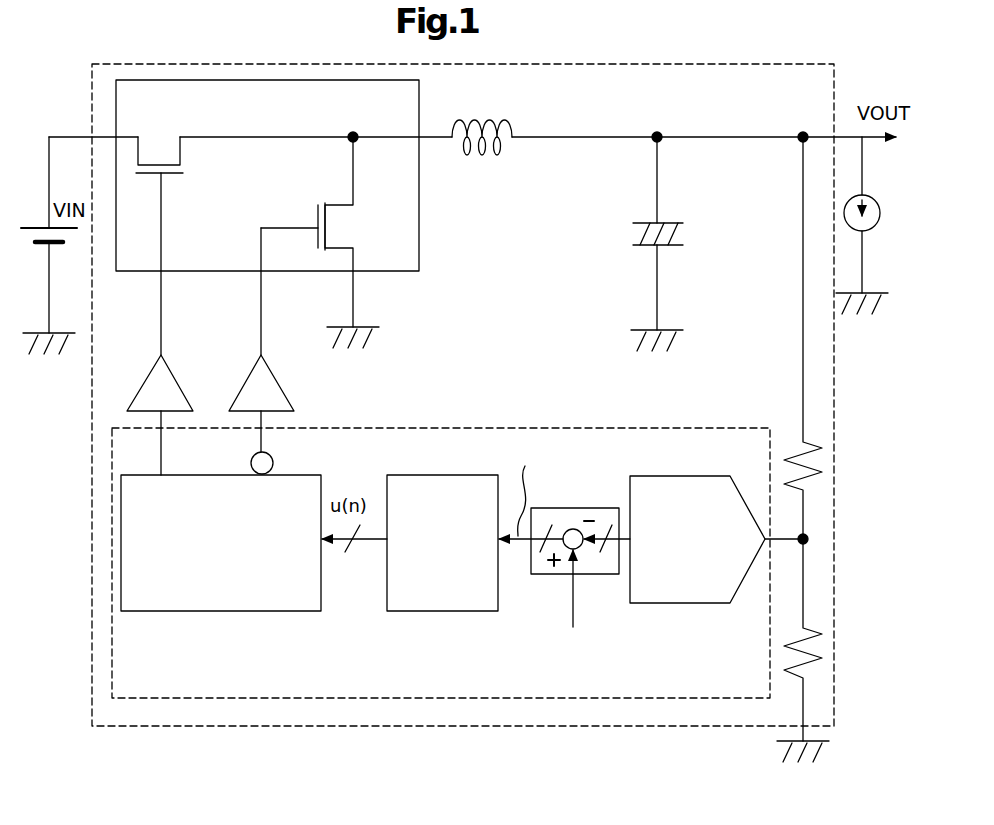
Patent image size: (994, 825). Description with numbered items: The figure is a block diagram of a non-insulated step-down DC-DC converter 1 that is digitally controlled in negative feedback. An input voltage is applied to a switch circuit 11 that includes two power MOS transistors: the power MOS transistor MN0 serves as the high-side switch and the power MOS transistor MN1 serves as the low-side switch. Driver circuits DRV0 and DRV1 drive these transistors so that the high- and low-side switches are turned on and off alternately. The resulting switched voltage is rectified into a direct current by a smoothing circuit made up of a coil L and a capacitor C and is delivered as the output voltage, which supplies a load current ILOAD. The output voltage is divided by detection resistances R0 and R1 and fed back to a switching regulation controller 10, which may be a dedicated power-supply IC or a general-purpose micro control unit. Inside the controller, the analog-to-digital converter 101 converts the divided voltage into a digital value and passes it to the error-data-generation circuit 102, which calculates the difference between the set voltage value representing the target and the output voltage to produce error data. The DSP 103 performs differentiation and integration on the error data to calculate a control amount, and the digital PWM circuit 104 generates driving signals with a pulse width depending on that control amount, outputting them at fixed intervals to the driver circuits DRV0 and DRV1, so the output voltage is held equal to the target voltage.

The DC-DC converter 1 is at (137, 726).
The switching regulation controller 10 is at (240, 698).
The switch circuit 11 is at (420, 258).
The analog-to-digital converter 101 is at (677, 603).
The error-data-generation circuit 102 is at (589, 508).
The DSP 103 is at (443, 611).
The digital PWM circuit 104 is at (218, 611).
The power MOS transistor MN0 is at (157, 147).
The power MOS transistor MN1 is at (337, 230).
The coil L is at (486, 156).
The capacitor C is at (631, 234).
The detection resistance R0 is at (825, 470).
The detection resistance R1 is at (825, 650).
The driver circuit DRV0 is at (143, 383).
The driver circuit DRV1 is at (245, 383).
The load current source ILOAD is at (879, 220).